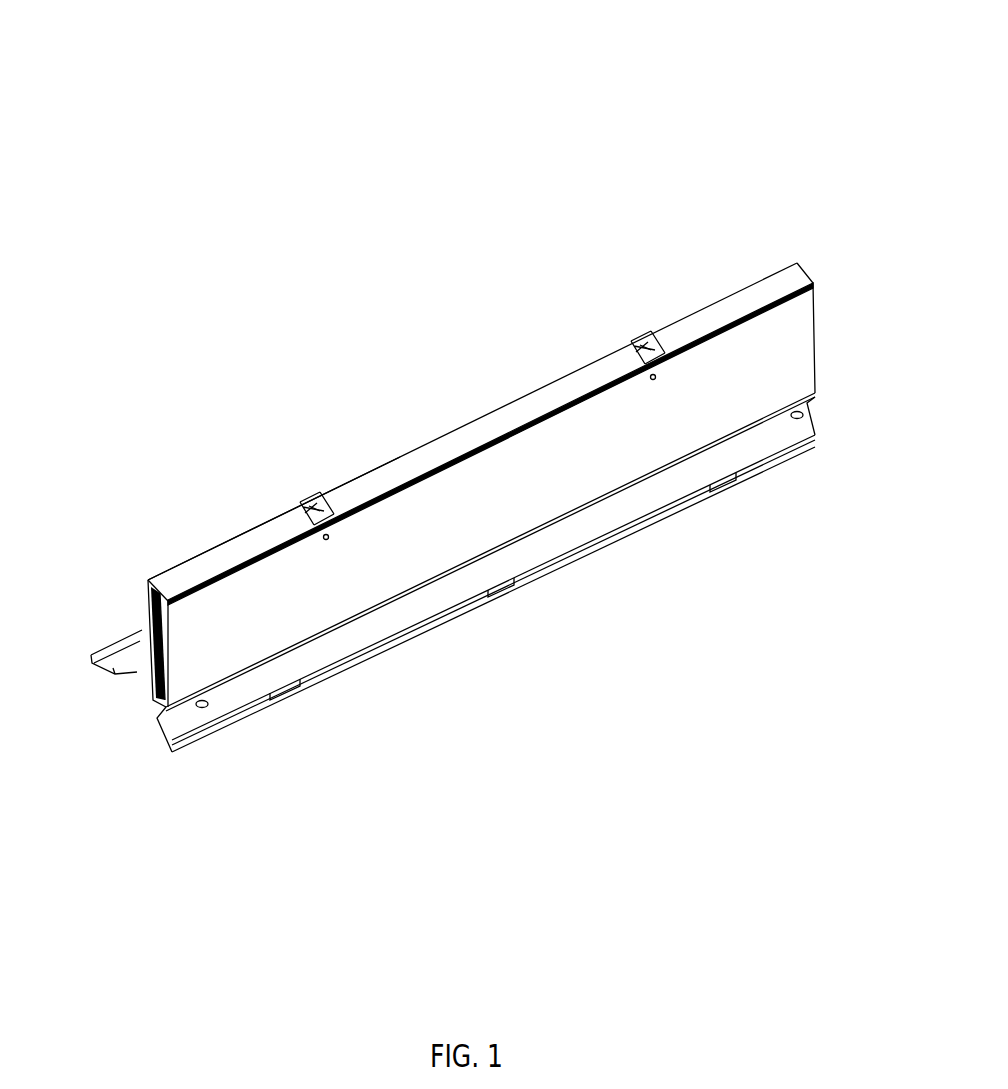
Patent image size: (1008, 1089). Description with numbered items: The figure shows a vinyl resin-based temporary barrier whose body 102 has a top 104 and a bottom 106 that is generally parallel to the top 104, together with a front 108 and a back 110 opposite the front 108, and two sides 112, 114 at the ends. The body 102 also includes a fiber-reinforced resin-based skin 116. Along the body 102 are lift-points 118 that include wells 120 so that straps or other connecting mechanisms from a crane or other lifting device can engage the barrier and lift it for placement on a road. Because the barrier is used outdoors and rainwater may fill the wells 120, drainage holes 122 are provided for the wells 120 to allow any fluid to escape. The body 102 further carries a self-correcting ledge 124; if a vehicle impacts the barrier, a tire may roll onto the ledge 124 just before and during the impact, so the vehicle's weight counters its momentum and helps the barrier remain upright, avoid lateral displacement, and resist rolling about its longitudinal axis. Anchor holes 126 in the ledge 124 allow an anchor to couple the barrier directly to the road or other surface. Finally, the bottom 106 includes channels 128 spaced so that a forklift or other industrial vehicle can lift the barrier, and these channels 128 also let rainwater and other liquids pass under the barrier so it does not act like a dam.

The body 102 is at (195, 568).
The top 104 is at (453, 440).
The bottom 106 is at (442, 655).
The front 108 is at (93, 689).
The back 110 is at (856, 313).
The side 112 is at (552, 462).
The side 114 is at (240, 366).
The fiber-reinforced resin-based skin 116 is at (803, 330).
The lift-point 118 is at (641, 340).
The well 120 is at (629, 350).
The drainage hole 122 is at (657, 375).
The self-correcting ledge 124 is at (563, 525).
The anchor hole 126 is at (204, 709).
The channel 128 is at (288, 709).